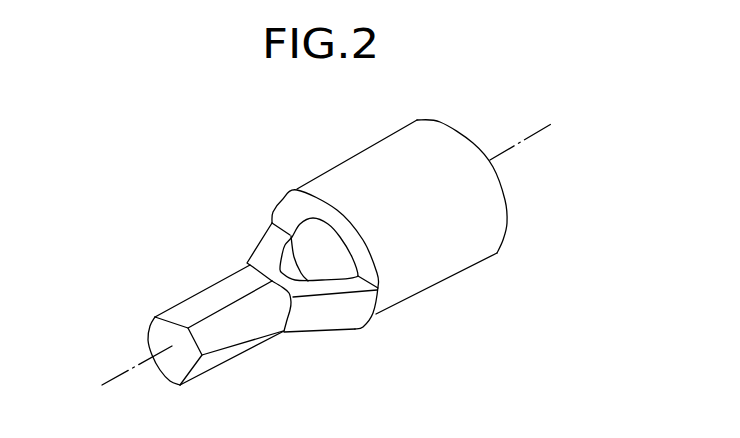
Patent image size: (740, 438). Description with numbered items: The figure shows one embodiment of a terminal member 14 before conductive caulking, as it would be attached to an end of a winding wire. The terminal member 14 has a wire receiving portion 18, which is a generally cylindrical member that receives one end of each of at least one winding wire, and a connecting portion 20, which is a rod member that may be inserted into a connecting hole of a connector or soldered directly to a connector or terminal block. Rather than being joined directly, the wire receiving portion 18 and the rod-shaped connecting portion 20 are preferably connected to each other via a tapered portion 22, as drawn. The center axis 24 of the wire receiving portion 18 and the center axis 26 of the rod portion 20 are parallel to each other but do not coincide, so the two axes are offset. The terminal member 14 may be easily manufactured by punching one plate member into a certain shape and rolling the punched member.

The terminal member 14 is at (203, 222).
The wire receiving portion 18 is at (440, 250).
The connecting portion 20 is at (227, 333).
The tapered portion 22 is at (320, 310).
The center axis of wire receiving portion 24 is at (535, 137).
The center axis of rod portion 26 is at (112, 377).